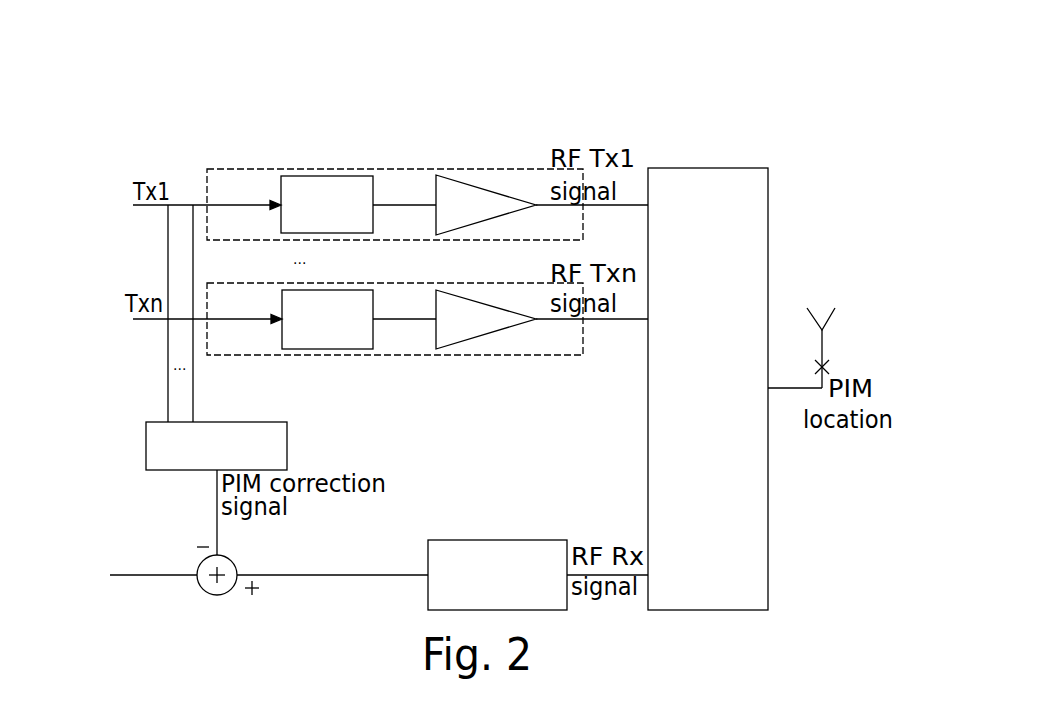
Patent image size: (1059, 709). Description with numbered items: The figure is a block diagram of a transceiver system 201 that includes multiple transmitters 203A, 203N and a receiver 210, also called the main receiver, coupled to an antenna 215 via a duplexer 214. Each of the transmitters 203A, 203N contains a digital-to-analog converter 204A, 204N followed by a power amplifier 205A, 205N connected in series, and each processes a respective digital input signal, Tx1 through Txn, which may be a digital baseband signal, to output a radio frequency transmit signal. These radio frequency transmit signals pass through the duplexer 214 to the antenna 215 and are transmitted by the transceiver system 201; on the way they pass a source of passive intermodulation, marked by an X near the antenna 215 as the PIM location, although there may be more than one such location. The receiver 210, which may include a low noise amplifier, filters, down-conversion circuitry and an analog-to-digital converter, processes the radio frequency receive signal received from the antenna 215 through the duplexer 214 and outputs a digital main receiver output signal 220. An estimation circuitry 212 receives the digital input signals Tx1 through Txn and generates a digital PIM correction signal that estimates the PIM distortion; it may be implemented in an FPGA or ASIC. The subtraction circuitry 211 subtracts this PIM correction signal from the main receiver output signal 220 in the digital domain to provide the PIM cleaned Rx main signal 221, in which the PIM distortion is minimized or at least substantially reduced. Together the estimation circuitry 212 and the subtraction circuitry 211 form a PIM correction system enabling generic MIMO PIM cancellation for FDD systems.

The transceiver system 201 is at (696, 124).
The transmitter 203A is at (275, 201).
The transmitter 203N is at (275, 317).
The digital-to-analog converter 204A is at (358, 229).
The digital-to-analog converter 204N is at (358, 347).
The power amplifier 205A is at (500, 217).
The power amplifier 205N is at (500, 331).
The receiver 210 is at (524, 599).
The subtraction circuitry 211 is at (197, 582).
The estimation circuitry 212 is at (238, 464).
The duplexer 214 is at (730, 599).
The antenna 215 is at (823, 343).
The main receiver output signal 220 is at (385, 522).
The PIM cleaned Rx main signal 221 is at (137, 517).